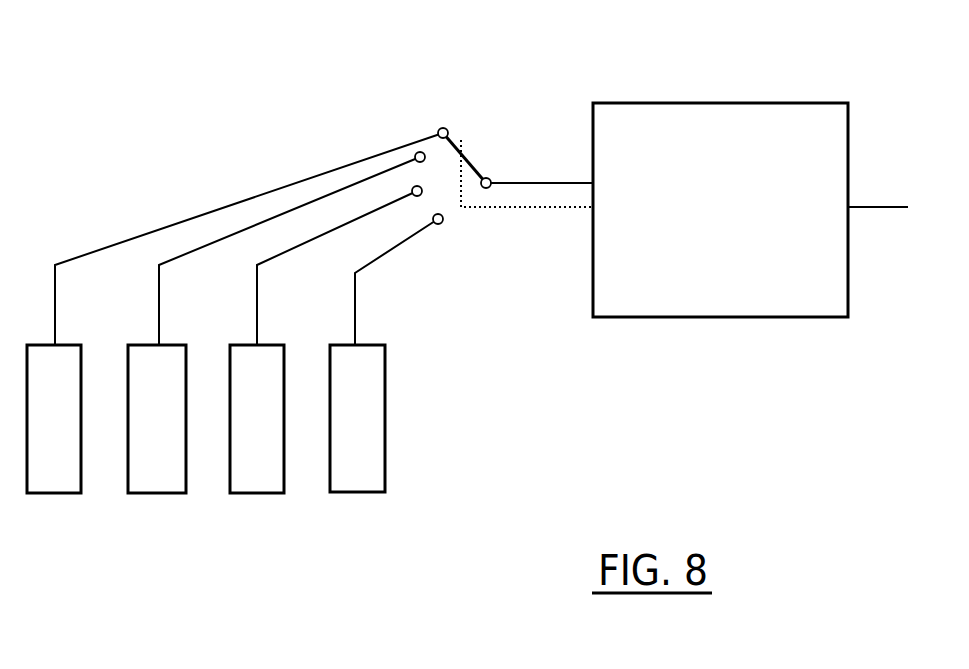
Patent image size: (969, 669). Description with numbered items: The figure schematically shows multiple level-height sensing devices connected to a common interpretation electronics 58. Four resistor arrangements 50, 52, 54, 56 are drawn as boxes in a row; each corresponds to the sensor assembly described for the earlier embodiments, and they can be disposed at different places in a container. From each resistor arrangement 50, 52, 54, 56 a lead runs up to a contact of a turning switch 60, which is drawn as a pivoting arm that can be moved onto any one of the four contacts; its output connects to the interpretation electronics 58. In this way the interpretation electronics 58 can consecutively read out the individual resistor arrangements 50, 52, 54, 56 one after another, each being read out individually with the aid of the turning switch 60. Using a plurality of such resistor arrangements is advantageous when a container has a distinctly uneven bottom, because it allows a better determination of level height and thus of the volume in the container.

The resistor arrangement 50 is at (57, 493).
The resistor arrangement 52 is at (164, 493).
The resistor arrangement 54 is at (260, 493).
The resistor arrangement 56 is at (362, 493).
The interpretation electronics 58 is at (742, 225).
The turning switch 60 is at (462, 143).